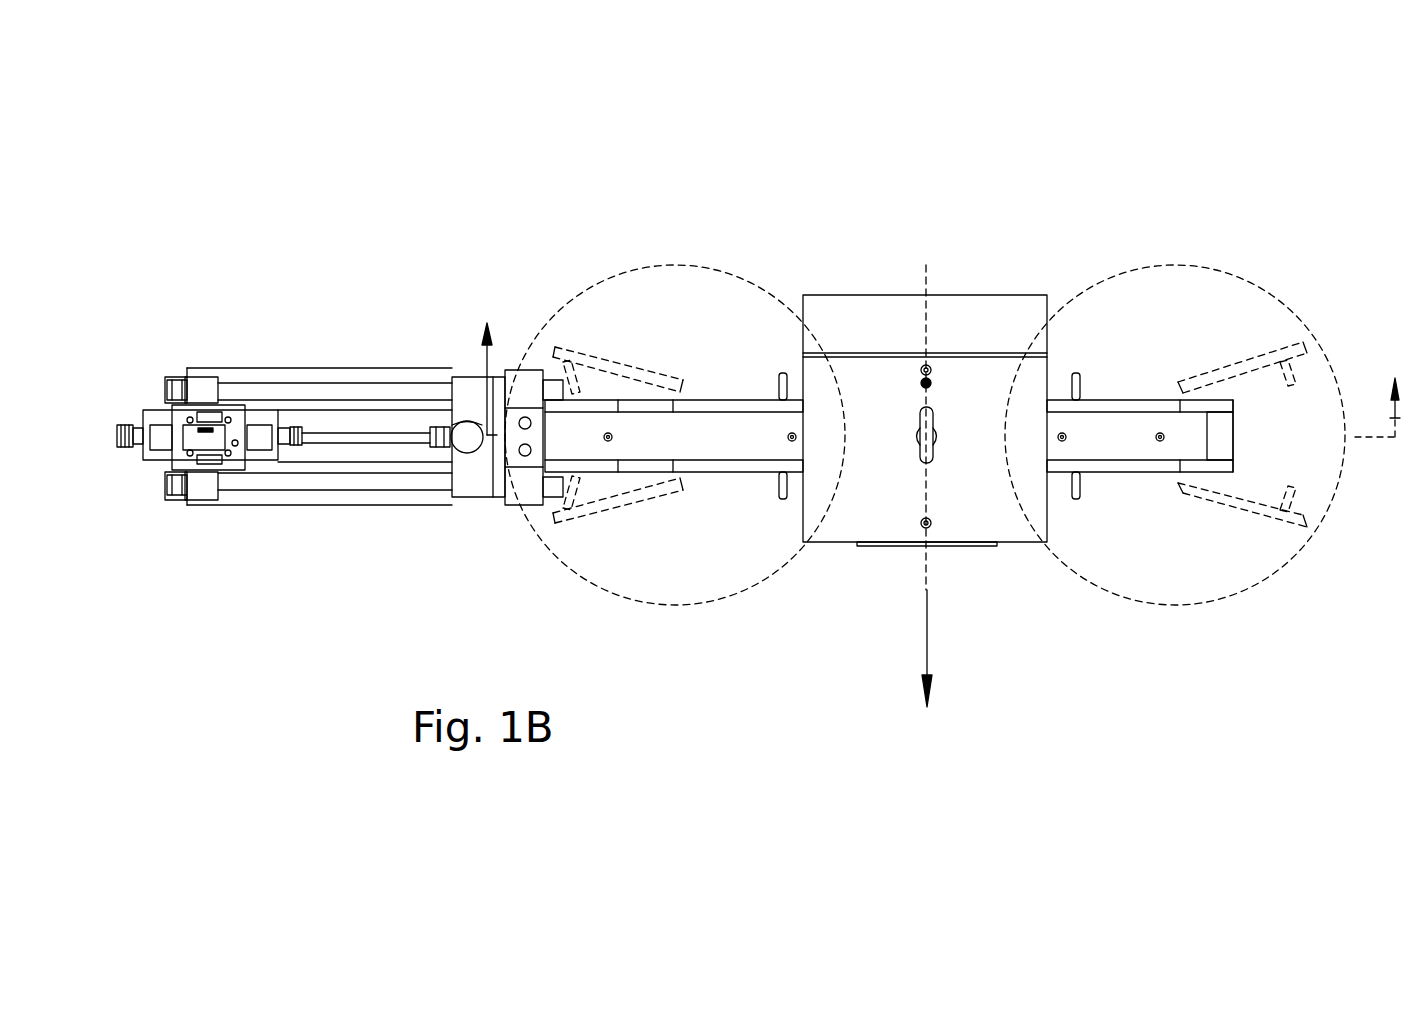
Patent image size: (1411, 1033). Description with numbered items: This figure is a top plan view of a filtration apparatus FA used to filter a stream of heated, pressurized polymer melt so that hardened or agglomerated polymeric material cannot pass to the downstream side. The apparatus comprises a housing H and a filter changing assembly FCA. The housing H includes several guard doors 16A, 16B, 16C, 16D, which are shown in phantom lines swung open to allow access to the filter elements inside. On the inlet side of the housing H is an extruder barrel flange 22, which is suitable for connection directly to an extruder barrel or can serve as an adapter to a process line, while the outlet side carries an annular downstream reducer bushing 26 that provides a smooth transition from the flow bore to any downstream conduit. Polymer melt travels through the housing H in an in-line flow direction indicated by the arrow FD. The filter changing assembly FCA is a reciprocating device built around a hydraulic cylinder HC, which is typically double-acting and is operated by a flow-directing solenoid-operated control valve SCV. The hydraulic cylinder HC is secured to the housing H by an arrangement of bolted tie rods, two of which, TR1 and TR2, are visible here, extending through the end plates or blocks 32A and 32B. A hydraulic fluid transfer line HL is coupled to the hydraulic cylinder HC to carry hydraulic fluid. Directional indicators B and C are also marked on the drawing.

The filtration apparatus FA is at (1075, 130).
The filter changing assembly FCA is at (212, 300).
The solenoid-operated control valve SCV is at (150, 405).
The tie rod TR1 is at (316, 376).
The tie rod TR2 is at (315, 505).
The hydraulic cylinder HC is at (380, 415).
The hydraulic fluid transfer line HL is at (393, 445).
The direction B is at (483, 363).
The direction C is at (779, 330).
The housing H is at (857, 235).
The in-line flow direction arrow FD is at (927, 612).
The extruder barrel flange 22 is at (958, 295).
The downstream reducer bushing 26 is at (887, 547).
The guard door 16A is at (735, 472).
The guard door 16B is at (1128, 473).
The guard door 16C is at (737, 400).
The guard door 16D is at (1105, 400).
The end block 32A is at (473, 507).
The end block 32B is at (198, 510).